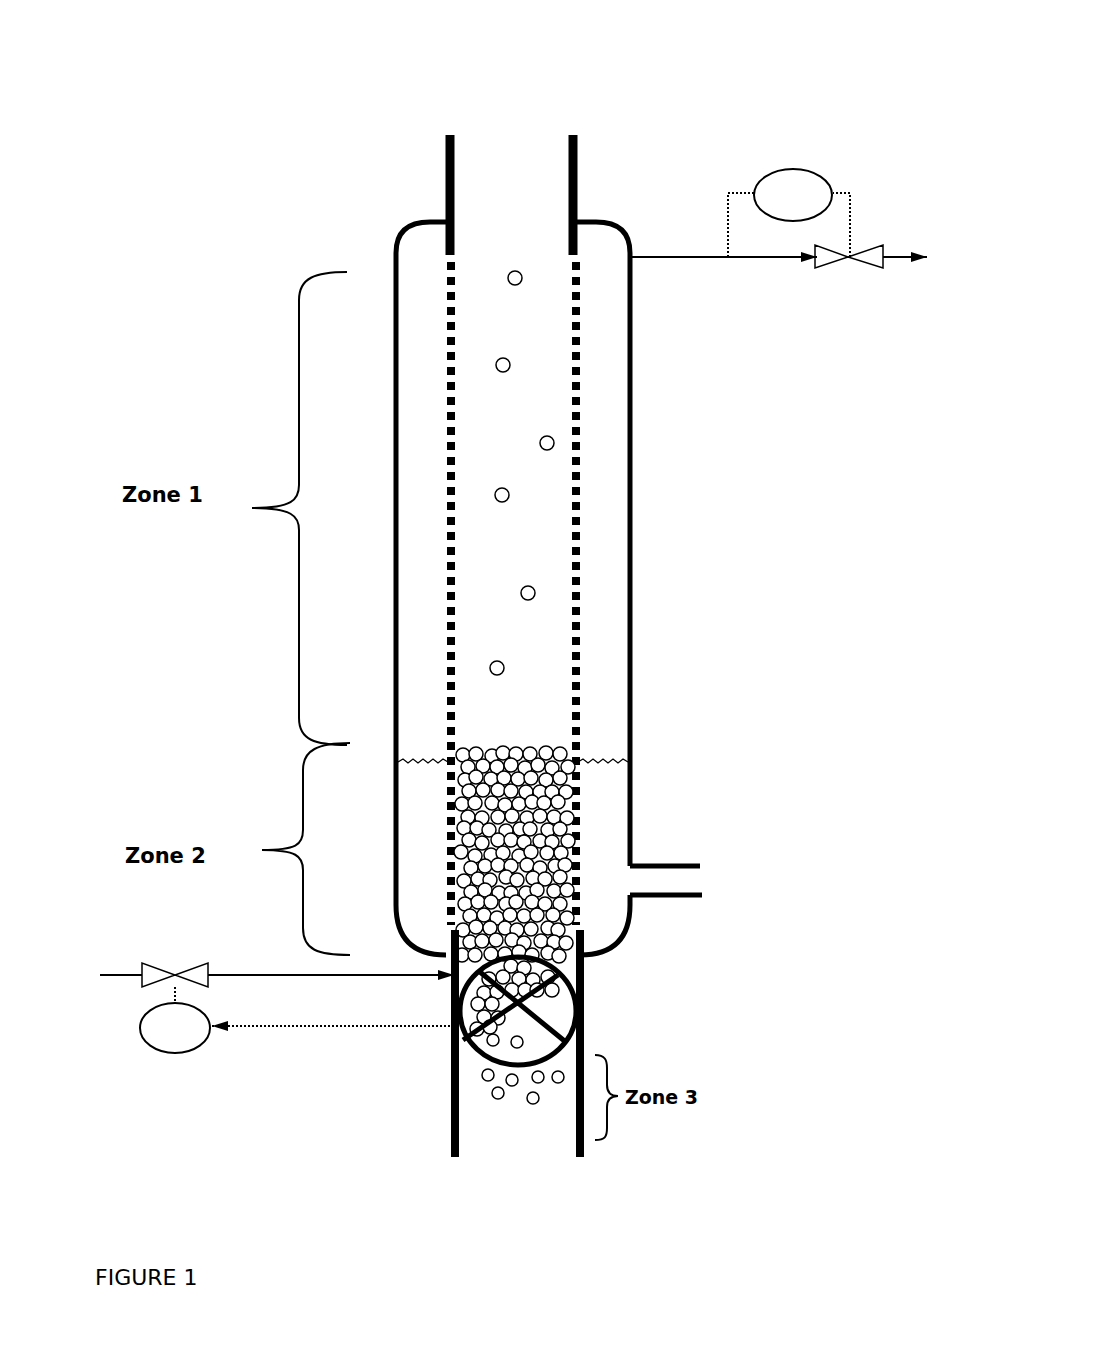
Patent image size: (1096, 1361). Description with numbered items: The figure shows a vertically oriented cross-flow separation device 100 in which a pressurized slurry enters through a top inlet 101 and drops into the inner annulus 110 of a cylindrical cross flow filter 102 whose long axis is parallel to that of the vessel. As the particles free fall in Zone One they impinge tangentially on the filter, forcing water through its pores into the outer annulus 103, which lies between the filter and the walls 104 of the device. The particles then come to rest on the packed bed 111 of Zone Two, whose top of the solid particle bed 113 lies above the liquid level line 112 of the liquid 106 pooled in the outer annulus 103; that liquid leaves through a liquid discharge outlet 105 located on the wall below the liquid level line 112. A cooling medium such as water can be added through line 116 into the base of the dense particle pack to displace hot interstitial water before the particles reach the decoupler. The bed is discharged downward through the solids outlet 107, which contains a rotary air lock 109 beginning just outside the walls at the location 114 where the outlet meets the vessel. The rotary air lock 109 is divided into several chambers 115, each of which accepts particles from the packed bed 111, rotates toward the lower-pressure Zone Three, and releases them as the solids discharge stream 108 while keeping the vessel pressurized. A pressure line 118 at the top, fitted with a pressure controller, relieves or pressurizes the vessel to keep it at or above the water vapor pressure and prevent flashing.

The separation device 100 is at (489, 536).
The inlet 101 is at (503, 130).
The cross flow filter 102 is at (580, 414).
The outer annulus 103 is at (610, 441).
The walls 104 is at (636, 462).
The liquid discharge outlet 105 is at (700, 880).
The liquid 106 is at (616, 811).
The solids outlet 107 is at (452, 1103).
The solids discharge stream 108 is at (518, 1107).
The rotary air lock 109 is at (462, 1050).
The inner annulus 110 is at (546, 387).
The packed bed 111 is at (636, 816).
The liquid level line 112 is at (618, 754).
The top of the solid particle bed 113 is at (526, 746).
The location where the solids outlet meets the walls of the separation device 114 is at (590, 962).
The chamber 115 is at (556, 1032).
The line 116 is at (249, 1008).
The pressure line 118 is at (778, 218).